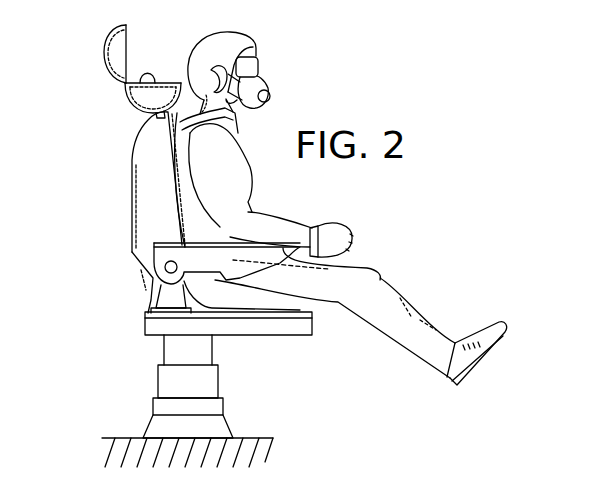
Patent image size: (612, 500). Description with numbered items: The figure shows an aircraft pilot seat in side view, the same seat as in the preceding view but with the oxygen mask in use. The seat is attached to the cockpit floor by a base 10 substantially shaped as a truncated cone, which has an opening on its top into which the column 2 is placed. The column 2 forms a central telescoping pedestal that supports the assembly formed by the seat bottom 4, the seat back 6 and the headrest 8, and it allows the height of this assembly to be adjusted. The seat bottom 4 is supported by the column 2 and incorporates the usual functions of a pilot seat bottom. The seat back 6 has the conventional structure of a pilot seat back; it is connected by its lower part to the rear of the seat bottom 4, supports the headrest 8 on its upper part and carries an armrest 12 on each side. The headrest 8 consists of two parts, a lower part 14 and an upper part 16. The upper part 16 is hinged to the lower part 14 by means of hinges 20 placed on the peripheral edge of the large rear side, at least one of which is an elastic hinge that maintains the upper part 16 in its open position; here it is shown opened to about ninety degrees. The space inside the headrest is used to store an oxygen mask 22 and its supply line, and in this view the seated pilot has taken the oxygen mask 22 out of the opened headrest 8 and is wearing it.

The column 2 is at (179, 348).
The seat bottom 4 is at (283, 323).
The seat back 6 is at (152, 213).
The headrest 8 is at (136, 118).
The base 10 is at (216, 428).
The armrest 12 is at (165, 254).
The lower part 14 is at (150, 98).
The upper part 16 is at (113, 50).
The hinges 20 is at (125, 84).
The oxygen mask 22 is at (257, 90).